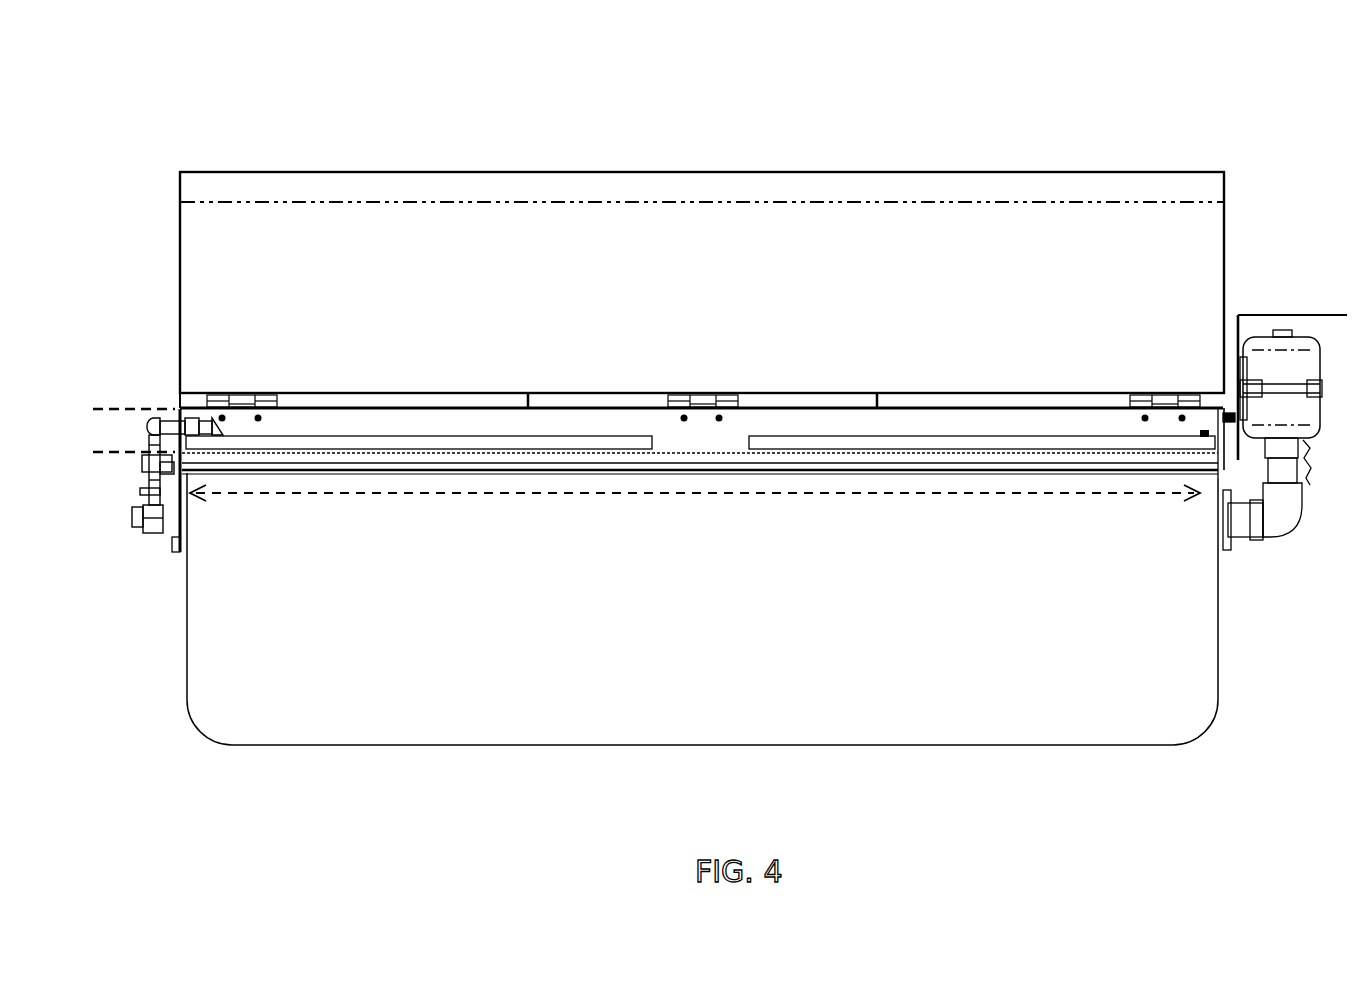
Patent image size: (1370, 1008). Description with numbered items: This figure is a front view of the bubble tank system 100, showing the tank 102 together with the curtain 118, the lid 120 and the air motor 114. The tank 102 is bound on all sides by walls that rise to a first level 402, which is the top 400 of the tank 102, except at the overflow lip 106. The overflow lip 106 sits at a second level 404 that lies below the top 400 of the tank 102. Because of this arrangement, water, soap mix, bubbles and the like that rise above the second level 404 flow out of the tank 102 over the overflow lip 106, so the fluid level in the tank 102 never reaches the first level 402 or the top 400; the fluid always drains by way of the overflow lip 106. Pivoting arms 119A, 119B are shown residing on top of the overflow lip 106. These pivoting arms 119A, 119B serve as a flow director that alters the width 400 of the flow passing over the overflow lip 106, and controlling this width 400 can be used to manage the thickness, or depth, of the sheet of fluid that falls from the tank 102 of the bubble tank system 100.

The bubble tank system 100 is at (197, 84).
The tank 102 is at (375, 428).
The overflow lip 106 is at (673, 452).
The air motor 114 is at (1298, 413).
The curtain 118 is at (417, 677).
The pivoting arm 119A is at (537, 440).
The pivoting arm 119B is at (1020, 438).
The lid 120 is at (583, 172).
The top of the tank 400 is at (700, 440).
The first level 402 is at (130, 408).
The second level 404 is at (115, 452).